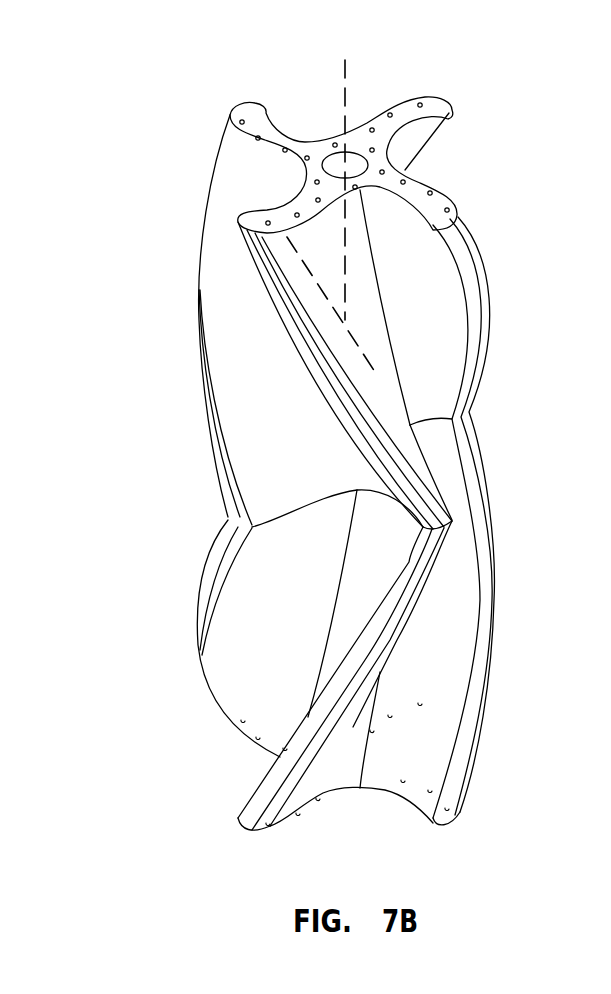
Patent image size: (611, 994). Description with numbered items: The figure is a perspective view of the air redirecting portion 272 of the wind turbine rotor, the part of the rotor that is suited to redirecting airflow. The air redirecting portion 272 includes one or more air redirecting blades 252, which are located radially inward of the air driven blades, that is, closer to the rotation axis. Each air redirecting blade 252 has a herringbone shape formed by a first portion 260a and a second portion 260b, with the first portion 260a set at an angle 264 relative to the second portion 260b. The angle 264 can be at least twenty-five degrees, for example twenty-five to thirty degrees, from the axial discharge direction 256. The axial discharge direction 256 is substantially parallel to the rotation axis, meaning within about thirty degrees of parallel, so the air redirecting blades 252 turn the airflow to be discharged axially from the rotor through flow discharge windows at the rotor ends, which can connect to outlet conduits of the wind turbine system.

The air redirecting portion 272 is at (211, 50).
The axial discharge direction 256 is at (345, 88).
The angle 264 is at (333, 293).
The air redirecting blade 252 is at (265, 460).
The first portion 260a is at (385, 400).
The second portion 260b is at (357, 598).